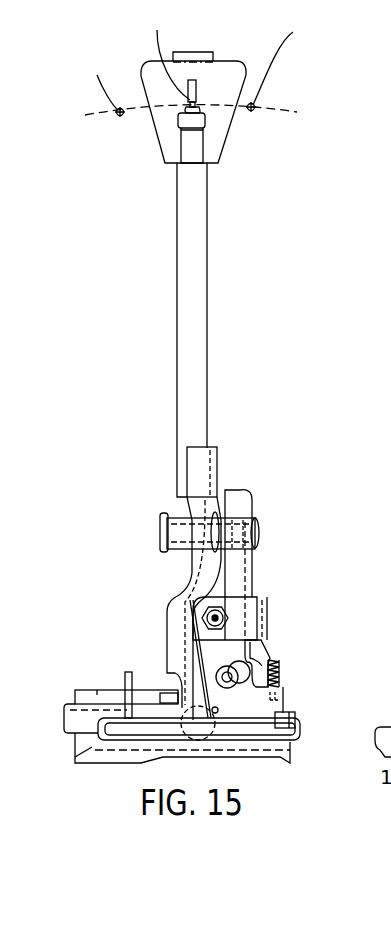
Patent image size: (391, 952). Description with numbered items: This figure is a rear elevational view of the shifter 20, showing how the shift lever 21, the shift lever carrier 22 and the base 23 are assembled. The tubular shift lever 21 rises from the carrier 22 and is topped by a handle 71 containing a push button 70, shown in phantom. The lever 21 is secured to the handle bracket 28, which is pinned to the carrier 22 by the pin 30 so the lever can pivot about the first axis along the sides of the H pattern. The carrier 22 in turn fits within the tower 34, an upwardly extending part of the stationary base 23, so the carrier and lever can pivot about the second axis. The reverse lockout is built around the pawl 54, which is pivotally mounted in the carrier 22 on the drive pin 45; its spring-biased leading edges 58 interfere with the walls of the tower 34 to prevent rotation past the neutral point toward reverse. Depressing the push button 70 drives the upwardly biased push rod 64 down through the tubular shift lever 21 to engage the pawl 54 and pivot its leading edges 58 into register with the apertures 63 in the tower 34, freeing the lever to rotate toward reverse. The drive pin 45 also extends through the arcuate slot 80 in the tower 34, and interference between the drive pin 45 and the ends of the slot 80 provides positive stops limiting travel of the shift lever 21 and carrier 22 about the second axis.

The shifter 20 is at (265, 300).
The shift lever 21 is at (200, 214).
The shift lever carrier 22 is at (235, 507).
The base 23 is at (281, 757).
The handle bracket 28 is at (232, 451).
The pin 30 is at (260, 533).
The tower 34 is at (243, 612).
The drive pin 45 is at (222, 674).
The pawl 54 is at (280, 668).
The leading edges 58 is at (283, 686).
The apertures 63 is at (268, 648).
The push rod 64 is at (194, 83).
The push button 70 is at (181, 53).
The handle 71 is at (217, 127).
The arcuate slot 80 is at (236, 663).